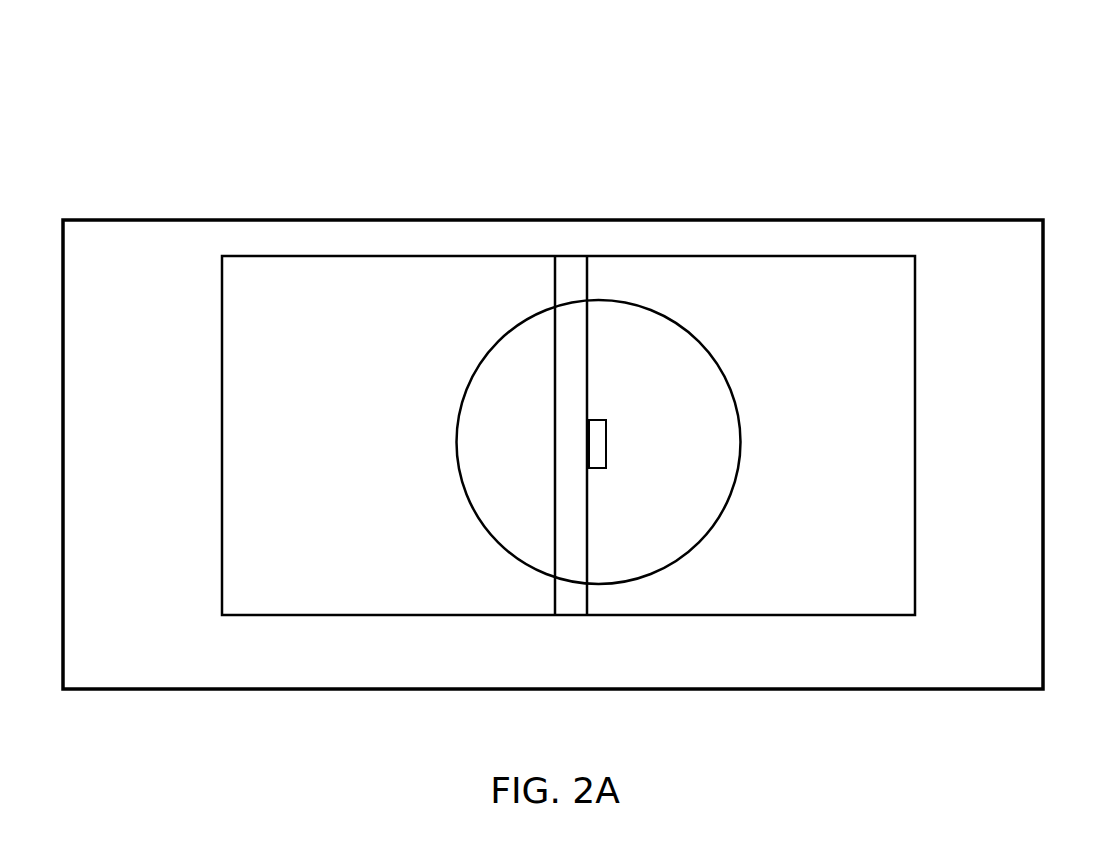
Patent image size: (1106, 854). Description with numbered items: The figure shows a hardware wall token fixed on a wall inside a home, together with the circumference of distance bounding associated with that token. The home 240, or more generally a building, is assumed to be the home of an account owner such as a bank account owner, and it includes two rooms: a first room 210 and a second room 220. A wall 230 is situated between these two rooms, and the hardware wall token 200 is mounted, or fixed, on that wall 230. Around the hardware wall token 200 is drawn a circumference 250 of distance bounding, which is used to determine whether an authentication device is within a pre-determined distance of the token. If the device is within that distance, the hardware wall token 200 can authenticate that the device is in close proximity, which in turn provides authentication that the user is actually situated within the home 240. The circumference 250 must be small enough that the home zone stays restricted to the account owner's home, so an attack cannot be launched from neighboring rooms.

The hardware wall token 200 is at (597, 440).
The first room 210 is at (388, 435).
The second room 220 is at (751, 435).
The wall 230 is at (567, 273).
The home 240 is at (553, 454).
The circumference of distance bounding 250 is at (673, 322).